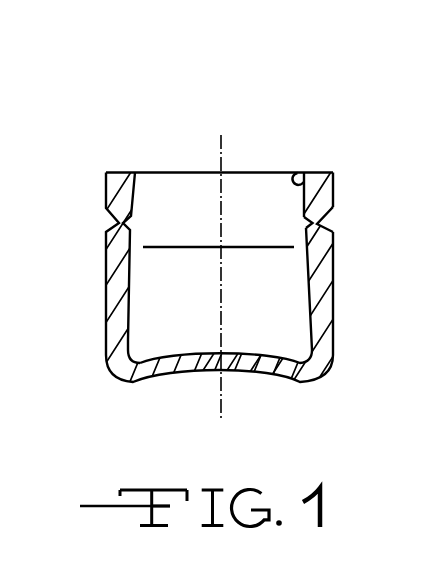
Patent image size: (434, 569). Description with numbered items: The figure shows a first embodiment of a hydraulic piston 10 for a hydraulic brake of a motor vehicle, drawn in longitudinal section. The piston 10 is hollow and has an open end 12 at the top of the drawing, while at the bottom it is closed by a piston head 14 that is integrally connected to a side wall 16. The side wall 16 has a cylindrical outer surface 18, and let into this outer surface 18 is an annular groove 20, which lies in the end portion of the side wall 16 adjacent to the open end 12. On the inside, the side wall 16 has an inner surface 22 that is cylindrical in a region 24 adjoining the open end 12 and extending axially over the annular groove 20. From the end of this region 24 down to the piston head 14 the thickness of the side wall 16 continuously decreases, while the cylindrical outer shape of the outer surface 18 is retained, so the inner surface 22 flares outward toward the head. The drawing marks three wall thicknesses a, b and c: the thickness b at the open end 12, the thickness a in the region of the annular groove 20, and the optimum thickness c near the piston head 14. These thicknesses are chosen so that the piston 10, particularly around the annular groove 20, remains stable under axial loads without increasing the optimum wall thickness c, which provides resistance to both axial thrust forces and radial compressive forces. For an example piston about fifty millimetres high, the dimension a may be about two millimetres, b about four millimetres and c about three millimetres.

The hydraulic piston 10 is at (222, 239).
The open end 12 is at (256, 172).
The piston head 14 is at (237, 362).
The side wall 16 is at (115, 279).
The cylindrical outer surface 18 is at (333, 313).
The annular groove 20 is at (334, 235).
The inner surface 22 is at (128, 341).
The cylindrical region 24 is at (292, 173).
The wall thickness a is at (139, 223).
The wall thickness b is at (142, 138).
The wall thickness c is at (137, 351).